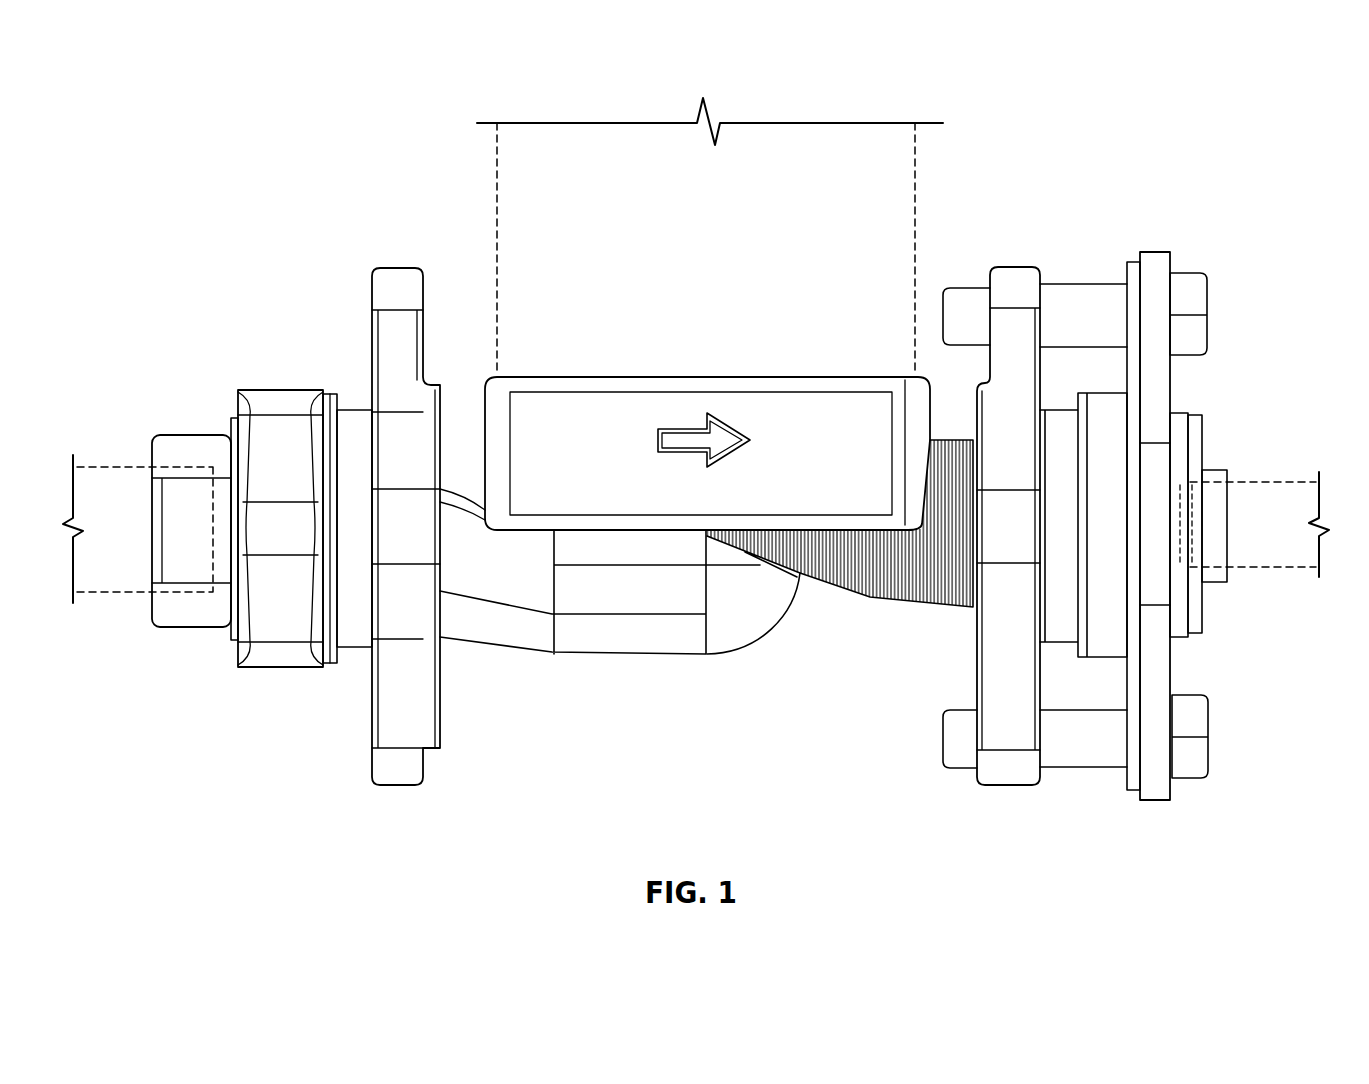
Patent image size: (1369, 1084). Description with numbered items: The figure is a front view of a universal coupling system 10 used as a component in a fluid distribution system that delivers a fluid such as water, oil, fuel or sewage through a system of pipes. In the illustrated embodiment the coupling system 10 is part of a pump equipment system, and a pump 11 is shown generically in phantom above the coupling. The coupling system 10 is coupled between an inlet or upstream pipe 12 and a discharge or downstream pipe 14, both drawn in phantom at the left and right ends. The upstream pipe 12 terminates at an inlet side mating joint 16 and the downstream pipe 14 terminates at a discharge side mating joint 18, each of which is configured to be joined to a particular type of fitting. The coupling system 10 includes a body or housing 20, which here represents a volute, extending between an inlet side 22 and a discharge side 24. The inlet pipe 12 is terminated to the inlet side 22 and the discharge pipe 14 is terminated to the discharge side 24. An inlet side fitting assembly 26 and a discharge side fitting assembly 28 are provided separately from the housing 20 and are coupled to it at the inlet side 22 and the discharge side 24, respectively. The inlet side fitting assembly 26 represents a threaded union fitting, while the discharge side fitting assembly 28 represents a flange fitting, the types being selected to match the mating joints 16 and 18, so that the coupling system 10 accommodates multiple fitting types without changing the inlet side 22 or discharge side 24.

The universal coupling system 10 is at (183, 107).
The pump 11 is at (890, 192).
The upstream pipe 12 is at (115, 468).
The downstream pipe 14 is at (1268, 494).
The inlet side mating joint 16 is at (207, 555).
The discharge side mating joint 18 is at (1206, 565).
The housing 20 is at (738, 708).
The inlet side 22 is at (312, 236).
The discharge side 24 is at (1243, 178).
The inlet side fitting assembly 26 is at (237, 356).
The discharge side fitting assembly 28 is at (1253, 332).